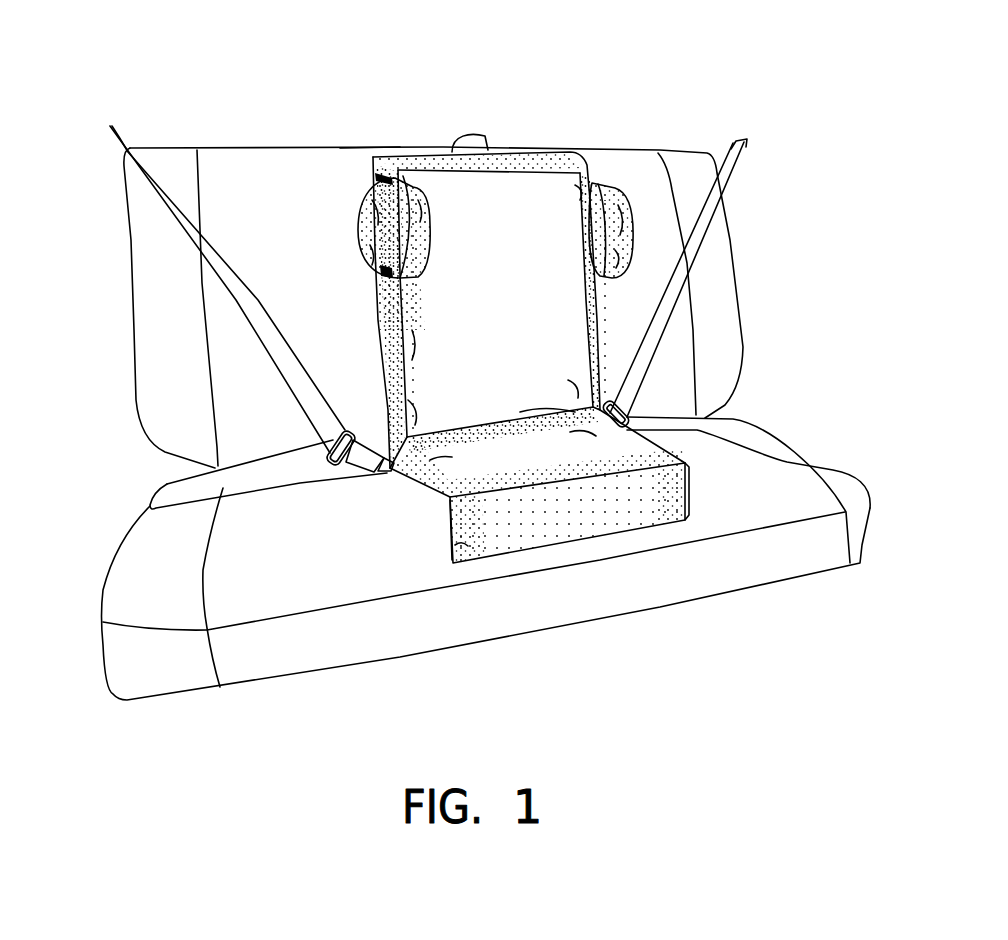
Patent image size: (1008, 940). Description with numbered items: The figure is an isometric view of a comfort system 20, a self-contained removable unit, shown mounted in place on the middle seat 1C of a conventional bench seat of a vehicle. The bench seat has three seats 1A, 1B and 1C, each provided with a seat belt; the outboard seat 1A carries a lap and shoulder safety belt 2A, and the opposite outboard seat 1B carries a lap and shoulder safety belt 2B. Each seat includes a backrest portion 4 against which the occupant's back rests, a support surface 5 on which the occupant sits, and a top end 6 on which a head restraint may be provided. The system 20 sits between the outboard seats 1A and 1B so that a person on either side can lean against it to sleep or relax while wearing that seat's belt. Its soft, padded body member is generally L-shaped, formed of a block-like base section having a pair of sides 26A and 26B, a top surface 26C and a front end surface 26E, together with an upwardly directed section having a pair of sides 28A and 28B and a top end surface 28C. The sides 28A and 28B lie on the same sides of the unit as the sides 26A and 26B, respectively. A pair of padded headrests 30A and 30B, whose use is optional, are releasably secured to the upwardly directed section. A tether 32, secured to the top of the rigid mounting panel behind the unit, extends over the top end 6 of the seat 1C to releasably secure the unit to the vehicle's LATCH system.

The seat 1A is at (236, 407).
The seat 1B is at (677, 381).
The middle seat 1C is at (549, 582).
The lap and shoulder safety belt 2A is at (208, 303).
The lap and shoulder safety belt 2B is at (712, 245).
The backrest portion 4 is at (232, 172).
The support surface 5 is at (290, 600).
The top end 6 is at (372, 153).
The comfort system 20 is at (465, 365).
The side 26A is at (430, 510).
The side 26B is at (683, 487).
The top surface 26C is at (563, 457).
The front end surface 26E is at (517, 527).
The side 28A is at (378, 340).
The side 28B is at (588, 335).
The top end surface 28C is at (513, 160).
The padded headrest 30A is at (382, 215).
The padded headrest 30B is at (637, 195).
The tether 32 is at (463, 135).